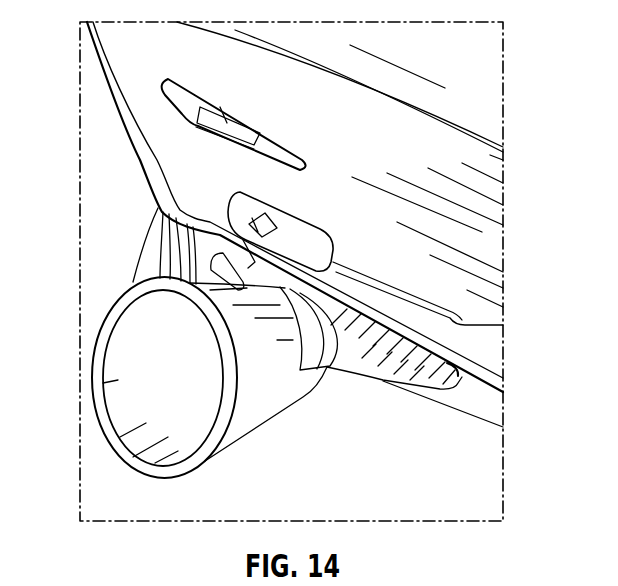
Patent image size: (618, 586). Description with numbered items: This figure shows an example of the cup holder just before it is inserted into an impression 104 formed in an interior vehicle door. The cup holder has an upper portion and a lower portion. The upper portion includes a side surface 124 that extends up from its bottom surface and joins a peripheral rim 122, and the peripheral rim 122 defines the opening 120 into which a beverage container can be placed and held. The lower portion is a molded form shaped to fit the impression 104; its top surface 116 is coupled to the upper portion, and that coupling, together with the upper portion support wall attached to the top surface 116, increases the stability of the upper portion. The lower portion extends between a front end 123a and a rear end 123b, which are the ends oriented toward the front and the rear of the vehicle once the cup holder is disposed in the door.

The impression 104 is at (358, 283).
The top surface of lower portion 116 is at (388, 372).
The opening of the cup holder 120 is at (122, 358).
The peripheral rim 122 is at (108, 432).
The front end of lower portion 123a is at (447, 362).
The rear end of lower portion 123b is at (262, 217).
The side surface of upper portion 124 is at (284, 392).